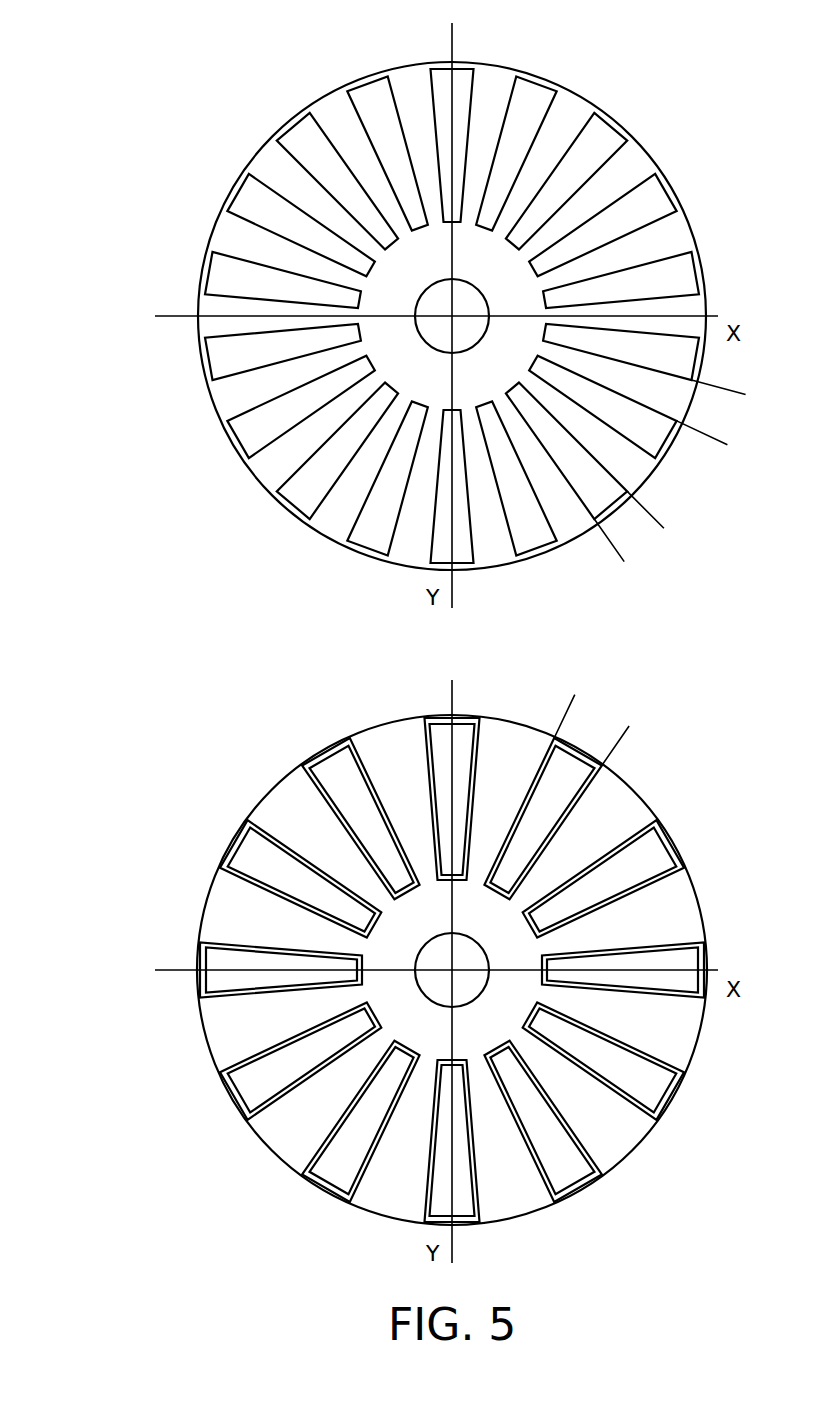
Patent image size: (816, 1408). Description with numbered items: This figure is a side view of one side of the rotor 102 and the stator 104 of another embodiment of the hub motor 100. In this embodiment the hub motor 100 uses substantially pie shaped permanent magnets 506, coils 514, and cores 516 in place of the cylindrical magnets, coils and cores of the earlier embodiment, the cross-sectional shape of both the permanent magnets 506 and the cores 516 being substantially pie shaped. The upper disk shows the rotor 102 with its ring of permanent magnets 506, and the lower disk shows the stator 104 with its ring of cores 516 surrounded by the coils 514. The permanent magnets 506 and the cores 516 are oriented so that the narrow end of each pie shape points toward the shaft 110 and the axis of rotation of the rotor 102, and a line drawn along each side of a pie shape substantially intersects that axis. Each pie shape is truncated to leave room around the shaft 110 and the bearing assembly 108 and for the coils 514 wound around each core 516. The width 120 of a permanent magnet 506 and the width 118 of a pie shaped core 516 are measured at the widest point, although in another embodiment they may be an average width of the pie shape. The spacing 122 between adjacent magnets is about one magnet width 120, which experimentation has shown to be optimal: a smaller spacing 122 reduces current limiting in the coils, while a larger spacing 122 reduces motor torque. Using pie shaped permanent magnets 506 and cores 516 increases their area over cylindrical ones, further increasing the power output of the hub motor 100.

The hub motor 100 is at (112, 62).
The rotor 102 is at (258, 143).
The stator 104 is at (205, 898).
The bearing assembly 108 is at (417, 315).
The shaft 110 is at (482, 948).
The width of the pie shaped cores 118 is at (565, 697).
The width of the magnets 120 is at (667, 500).
The spacing between magnets 122 is at (745, 371).
The pie shaped permanent magnets 506 is at (228, 202).
The coils 514 is at (298, 778).
The cores 516 is at (350, 739).